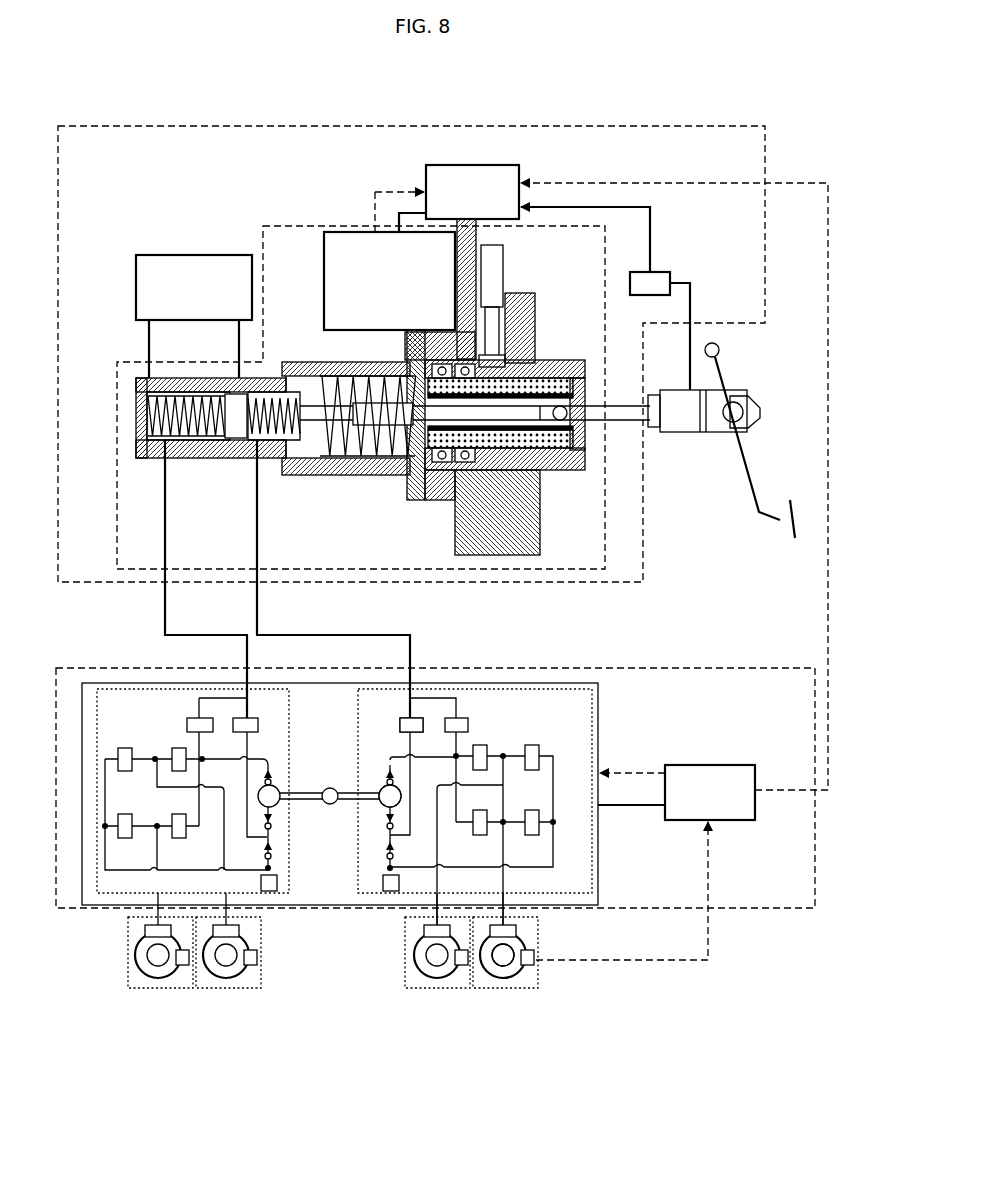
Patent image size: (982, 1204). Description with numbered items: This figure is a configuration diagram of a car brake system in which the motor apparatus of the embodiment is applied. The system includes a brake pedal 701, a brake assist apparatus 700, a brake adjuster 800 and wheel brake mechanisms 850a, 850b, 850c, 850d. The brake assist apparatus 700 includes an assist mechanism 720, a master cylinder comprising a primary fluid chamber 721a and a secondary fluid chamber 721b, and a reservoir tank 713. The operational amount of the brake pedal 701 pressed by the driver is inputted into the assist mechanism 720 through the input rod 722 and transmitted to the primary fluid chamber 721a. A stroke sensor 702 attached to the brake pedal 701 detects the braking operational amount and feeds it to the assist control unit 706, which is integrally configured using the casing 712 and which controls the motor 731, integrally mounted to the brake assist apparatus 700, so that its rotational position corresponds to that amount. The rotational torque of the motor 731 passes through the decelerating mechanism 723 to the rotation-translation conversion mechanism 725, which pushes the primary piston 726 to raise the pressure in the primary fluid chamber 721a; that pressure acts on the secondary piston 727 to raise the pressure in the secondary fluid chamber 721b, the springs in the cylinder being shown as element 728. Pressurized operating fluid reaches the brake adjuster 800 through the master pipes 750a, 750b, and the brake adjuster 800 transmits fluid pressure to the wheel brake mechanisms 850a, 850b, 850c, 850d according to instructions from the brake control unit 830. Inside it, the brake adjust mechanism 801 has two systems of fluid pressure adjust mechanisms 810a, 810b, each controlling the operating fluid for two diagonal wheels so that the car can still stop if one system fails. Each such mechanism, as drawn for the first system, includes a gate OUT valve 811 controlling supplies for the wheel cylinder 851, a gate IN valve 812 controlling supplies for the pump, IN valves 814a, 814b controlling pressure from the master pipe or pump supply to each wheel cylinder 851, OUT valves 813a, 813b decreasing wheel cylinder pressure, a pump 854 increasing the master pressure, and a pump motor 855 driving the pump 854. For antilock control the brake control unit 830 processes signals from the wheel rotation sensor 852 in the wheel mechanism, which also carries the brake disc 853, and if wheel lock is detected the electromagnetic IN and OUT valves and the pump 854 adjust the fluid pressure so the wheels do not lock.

The brake assist apparatus 700 is at (182, 126).
The brake pedal 701 is at (758, 464).
The stroke sensor 702 is at (668, 272).
The assist control unit 706 is at (487, 180).
The casing 712 is at (478, 238).
The reservoir tank 713 is at (186, 255).
The assist mechanism 720 is at (275, 226).
The primary fluid chamber 721a is at (238, 400).
The secondary fluid chamber 721b is at (170, 390).
The input rod 722 is at (598, 386).
The decelerating mechanism 723 is at (504, 274).
The rotation-translation conversion mechanism 725 is at (440, 470).
The primary piston 726 is at (318, 444).
The secondary piston 727 is at (233, 440).
The booster spring 728 is at (381, 454).
The motor 731 is at (378, 206).
The master pipe 750a is at (292, 638).
The master pipe 750b is at (186, 638).
The brake adjuster 800 is at (698, 666).
The brake adjust mechanism 801 is at (562, 682).
The fluid pressure adjust mechanism 810a is at (566, 700).
The fluid pressure adjust mechanism 810b is at (112, 688).
The gate OUT valve 811 is at (464, 720).
The gate IN valve 812 is at (400, 722).
The OUT valve 813a is at (536, 748).
The OUT valve 813b is at (532, 810).
The IN valve 814a is at (482, 748).
The IN valve 814b is at (480, 834).
The brake control unit 830 is at (706, 766).
The wheel brake mechanism 850a is at (474, 980).
The wheel brake mechanism 850b is at (400, 980).
The wheel brake mechanism 850c is at (238, 990).
The wheel brake mechanism 850d is at (150, 984).
The wheel cylinder 851 is at (514, 930).
The wheel rotation sensor 852 is at (536, 958).
The brake disc 853 is at (504, 970).
The pump 854 is at (384, 786).
The pump motor 855 is at (330, 804).